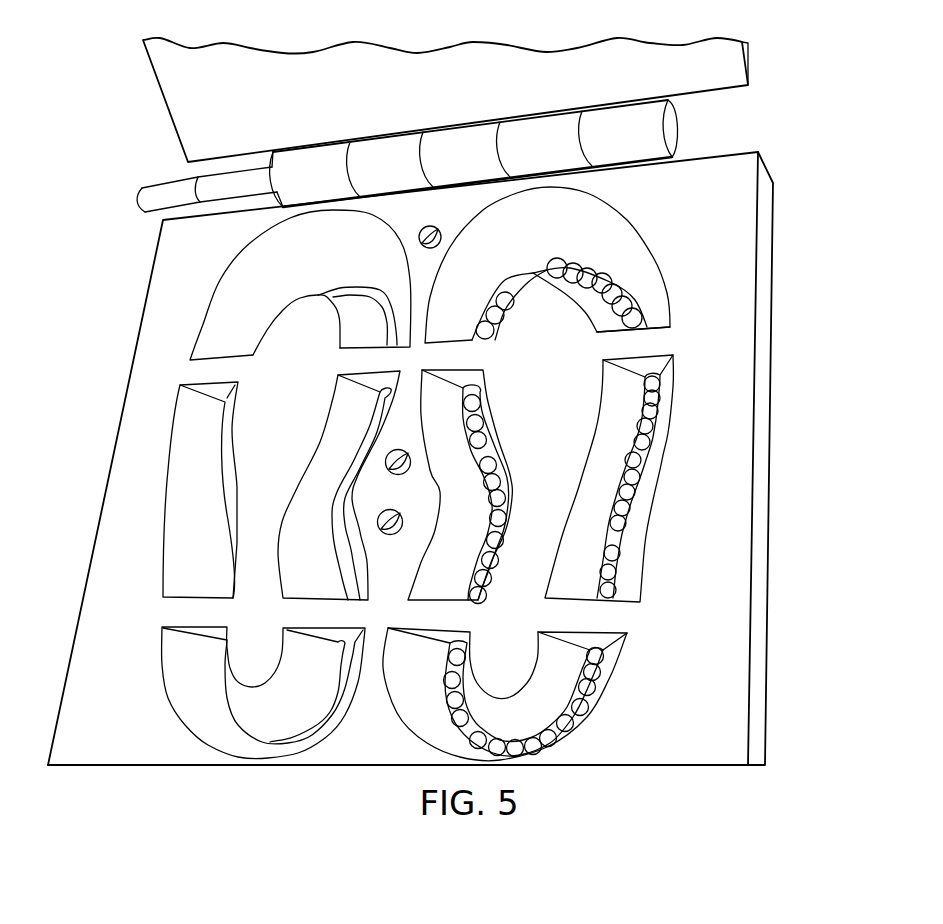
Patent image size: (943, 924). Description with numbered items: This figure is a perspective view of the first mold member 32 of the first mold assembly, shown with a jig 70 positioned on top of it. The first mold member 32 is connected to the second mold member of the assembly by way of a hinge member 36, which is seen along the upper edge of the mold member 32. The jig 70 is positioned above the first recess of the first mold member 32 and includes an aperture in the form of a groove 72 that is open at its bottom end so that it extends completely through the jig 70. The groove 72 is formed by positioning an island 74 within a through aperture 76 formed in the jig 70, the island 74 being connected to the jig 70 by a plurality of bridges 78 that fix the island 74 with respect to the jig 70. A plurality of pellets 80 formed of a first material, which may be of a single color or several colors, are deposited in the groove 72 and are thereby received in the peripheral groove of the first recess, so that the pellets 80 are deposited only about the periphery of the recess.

The first mold member 32 is at (763, 307).
The hinge member 36 is at (224, 199).
The jig 70 is at (713, 753).
The groove 72 is at (611, 478).
The island 74 is at (546, 474).
The through aperture 76 is at (630, 245).
The bridges 78 is at (657, 340).
The pellets 80 is at (627, 457).